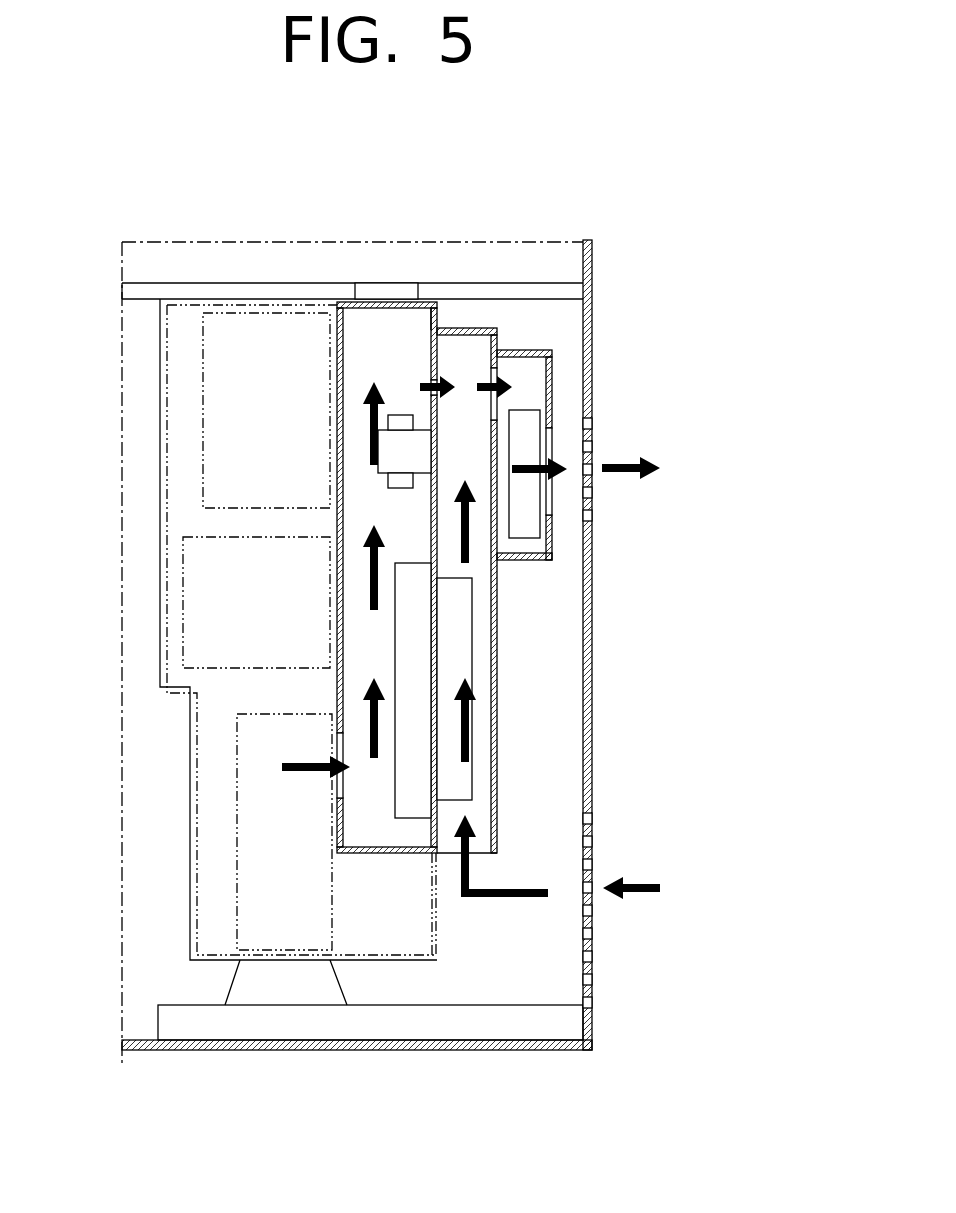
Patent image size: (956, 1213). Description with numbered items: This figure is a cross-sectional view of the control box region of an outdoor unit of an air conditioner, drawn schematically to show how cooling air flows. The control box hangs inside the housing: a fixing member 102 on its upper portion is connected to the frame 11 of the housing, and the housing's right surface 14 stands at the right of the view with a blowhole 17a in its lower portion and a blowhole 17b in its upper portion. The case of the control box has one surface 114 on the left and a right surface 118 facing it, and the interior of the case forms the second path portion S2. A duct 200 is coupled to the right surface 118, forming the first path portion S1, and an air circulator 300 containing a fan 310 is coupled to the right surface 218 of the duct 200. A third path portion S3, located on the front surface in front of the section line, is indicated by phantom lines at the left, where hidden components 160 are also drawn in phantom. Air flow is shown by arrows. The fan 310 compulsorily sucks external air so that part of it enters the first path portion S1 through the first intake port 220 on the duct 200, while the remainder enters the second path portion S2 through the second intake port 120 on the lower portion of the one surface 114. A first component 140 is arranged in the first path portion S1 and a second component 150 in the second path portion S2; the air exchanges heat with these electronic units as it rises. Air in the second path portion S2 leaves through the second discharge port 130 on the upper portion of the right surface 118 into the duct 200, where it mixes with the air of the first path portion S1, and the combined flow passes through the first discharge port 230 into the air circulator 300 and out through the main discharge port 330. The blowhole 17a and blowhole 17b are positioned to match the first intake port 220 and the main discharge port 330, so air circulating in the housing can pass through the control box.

The frame 11 is at (178, 264).
The right surface 14 is at (592, 262).
The blowhole 17a is at (590, 864).
The blowhole 17b is at (588, 490).
The fixing member 102 is at (378, 290).
The one surface 114 is at (338, 343).
The right surface 118 is at (437, 317).
The second intake port 120 is at (338, 782).
The second discharge port 130 is at (434, 377).
The first component 140 is at (413, 668).
The second component 150 is at (412, 460).
The compressor/hidden components 160 is at (210, 438).
The duct 200 is at (480, 318).
The right surface 218 is at (497, 340).
The first intake port 220 is at (475, 855).
The first discharge port 230 is at (493, 375).
The air circulator 300 is at (547, 334).
The fan 310 is at (523, 416).
The main discharge port 330 is at (548, 448).
The first path portion S1 is at (482, 560).
The second path portion S2 is at (384, 345).
The third path portion S3 is at (181, 368).